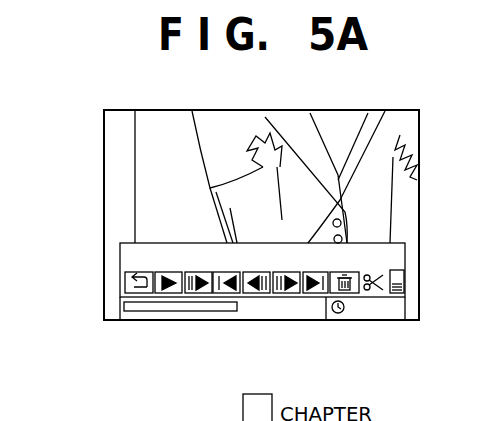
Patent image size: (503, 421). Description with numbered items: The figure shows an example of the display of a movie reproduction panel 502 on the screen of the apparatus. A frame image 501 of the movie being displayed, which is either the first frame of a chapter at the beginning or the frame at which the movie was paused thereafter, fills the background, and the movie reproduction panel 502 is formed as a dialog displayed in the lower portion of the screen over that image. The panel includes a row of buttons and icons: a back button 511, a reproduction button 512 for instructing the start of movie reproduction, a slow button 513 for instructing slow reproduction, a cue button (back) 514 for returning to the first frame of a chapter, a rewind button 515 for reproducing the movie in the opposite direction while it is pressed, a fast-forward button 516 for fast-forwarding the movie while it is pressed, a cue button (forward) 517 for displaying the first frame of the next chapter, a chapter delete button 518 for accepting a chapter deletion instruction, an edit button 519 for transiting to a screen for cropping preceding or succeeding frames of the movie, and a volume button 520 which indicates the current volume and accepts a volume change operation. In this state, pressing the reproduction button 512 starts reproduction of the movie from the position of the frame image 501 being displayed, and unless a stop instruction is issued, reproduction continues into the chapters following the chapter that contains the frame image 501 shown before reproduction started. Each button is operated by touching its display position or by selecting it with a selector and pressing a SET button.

The frame image 501 is at (210, 110).
The movie reproduction panel 502 is at (137, 321).
The back button 511 is at (131, 283).
The reproduction button 512 is at (172, 292).
The slow button 513 is at (197, 293).
The cue button (back) 514 is at (229, 293).
The rewind button 515 is at (257, 293).
The fast-forward button 516 is at (348, 271).
The cue button (forward) 517 is at (324, 318).
The chapter delete button 518 is at (372, 243).
The edit button 519 is at (374, 276).
The volume button 520 is at (406, 280).